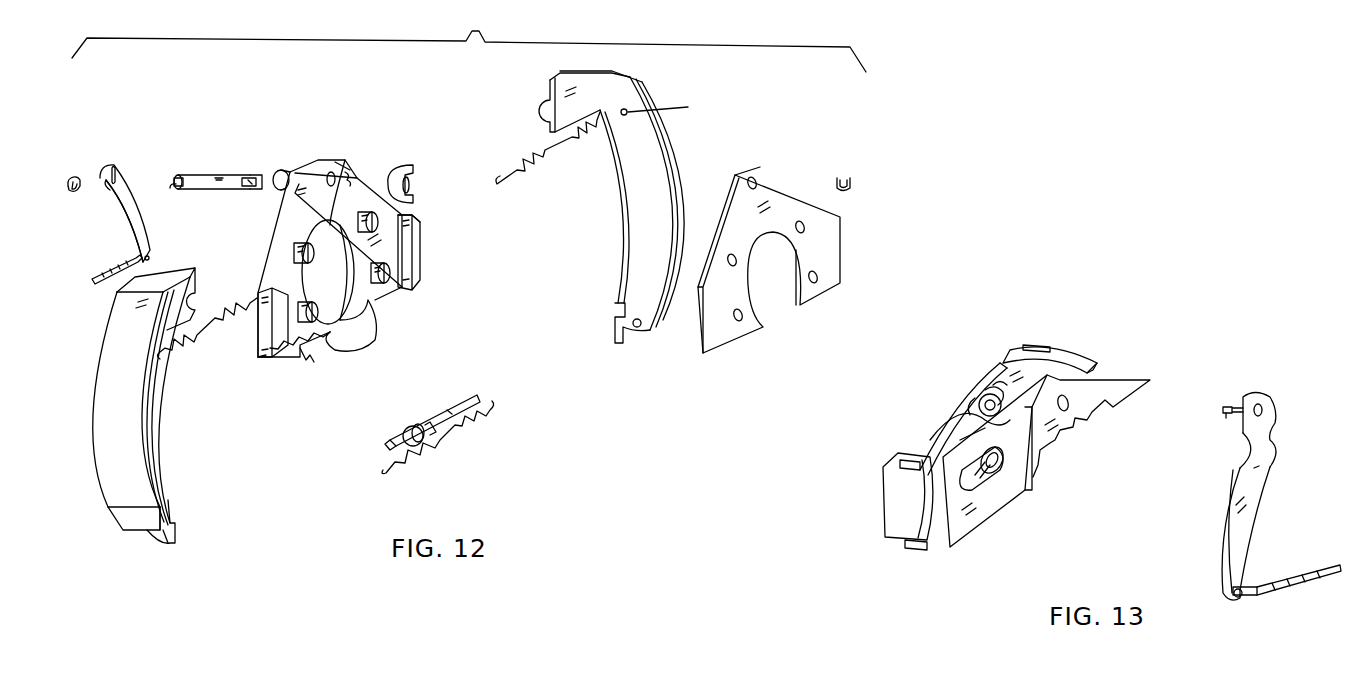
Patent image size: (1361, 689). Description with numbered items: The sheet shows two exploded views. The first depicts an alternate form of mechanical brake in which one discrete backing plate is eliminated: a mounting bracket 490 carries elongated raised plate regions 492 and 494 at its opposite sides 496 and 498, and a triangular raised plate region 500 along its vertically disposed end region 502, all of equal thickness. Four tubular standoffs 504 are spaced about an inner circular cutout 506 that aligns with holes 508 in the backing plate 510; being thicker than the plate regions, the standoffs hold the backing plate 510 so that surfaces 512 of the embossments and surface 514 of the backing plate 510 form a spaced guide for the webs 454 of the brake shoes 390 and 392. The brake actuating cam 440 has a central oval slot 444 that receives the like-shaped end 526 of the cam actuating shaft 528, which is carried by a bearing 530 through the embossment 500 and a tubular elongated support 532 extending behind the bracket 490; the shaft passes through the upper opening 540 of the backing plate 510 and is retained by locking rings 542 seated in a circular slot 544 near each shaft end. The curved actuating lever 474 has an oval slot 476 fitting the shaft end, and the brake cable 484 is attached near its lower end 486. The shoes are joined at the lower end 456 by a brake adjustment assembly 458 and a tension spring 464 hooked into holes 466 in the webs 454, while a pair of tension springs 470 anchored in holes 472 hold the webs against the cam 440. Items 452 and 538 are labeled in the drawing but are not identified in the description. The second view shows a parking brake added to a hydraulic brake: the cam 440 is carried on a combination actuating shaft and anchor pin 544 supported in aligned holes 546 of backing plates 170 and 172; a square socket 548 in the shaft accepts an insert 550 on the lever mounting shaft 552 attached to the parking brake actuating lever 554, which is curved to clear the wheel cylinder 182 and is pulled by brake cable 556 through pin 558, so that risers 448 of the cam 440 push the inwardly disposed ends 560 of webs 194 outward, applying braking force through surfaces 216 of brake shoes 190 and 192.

In FIG. 12, the brake shoe 390 is at (97, 423).
In FIG. 12, the brake shoe 392 is at (690, 140).
In FIG. 12, the brake actuating cam 440 is at (405, 168).
In FIG. 13, the brake actuating cam 440 is at (975, 399).
In FIG. 12, the oval slot 444 is at (415, 180).
In FIG. 13, the risers 448 is at (955, 424).
In FIG. 12, the shoe web 452 is at (199, 271).
In FIG. 12, the webs 454 is at (165, 455).
In FIG. 12, the lower end 456 is at (176, 546).
In FIG. 12, the brake adjustment assembly 458 is at (460, 394).
In FIG. 12, the tension spring 464 is at (442, 450).
In FIG. 12, the holes 466 is at (641, 328).
In FIG. 12, the tension springs 470 is at (197, 345).
In FIG. 12, the holes 472 is at (662, 108).
In FIG. 12, the actuating lever 474 is at (142, 214).
In FIG. 12, the oval slot 476 is at (125, 199).
In FIG. 12, the brake cable 484 is at (122, 260).
In FIG. 12, the lower end 486 is at (152, 256).
In FIG. 12, the mounting bracket 490 is at (312, 365).
In FIG. 12, the raised plate region 492 is at (262, 360).
In FIG. 12, the raised plate region 494 is at (415, 285).
In FIG. 12, the side 496 is at (259, 333).
In FIG. 12, the side 498 is at (412, 215).
In FIG. 12, the triangular-shaped embossment 500 is at (340, 163).
In FIG. 12, the vertically disposed end region 502 is at (288, 222).
In FIG. 12, the tubular standoffs 504 is at (382, 285).
In FIG. 12, the inner circular cutout 506 is at (374, 336).
In FIG. 12, the holes 508 is at (818, 272).
In FIG. 12, the backing plate 510 is at (838, 262).
In FIG. 12, the surfaces 512 is at (352, 178).
In FIG. 12, the surface 514 is at (760, 167).
In FIG. 12, the end 526 is at (248, 190).
In FIG. 12, the cam actuating shaft 528 is at (238, 162).
In FIG. 12, the bearing 530 is at (331, 172).
In FIG. 12, the tubular elongated support 532 is at (292, 170).
In FIG. 12, the groove 538 is at (172, 188).
In FIG. 12, the upper opening 540 is at (760, 169).
In FIG. 12, the locking rings 542 is at (78, 170).
In FIG. 12, the combination brake actuating shaft and anchor pin 544 is at (184, 163).
In FIG. 13, the combination brake actuating shaft and anchor pin 544 is at (988, 379).
In FIG. 13, the aligned holes 546 is at (1068, 412).
In FIG. 13, the square socket 548 is at (985, 389).
In FIG. 13, the insert 550 is at (1232, 401).
In FIG. 13, the lever mounting shaft 552 is at (1231, 416).
In FIG. 13, the parking brake actuating lever 554 is at (1270, 426).
In FIG. 13, the brake cable 556 is at (1312, 577).
In FIG. 13, the pin 558 is at (1240, 597).
In FIG. 13, the inwardly disposed ends 560 is at (965, 407).
In FIG. 13, the backing plate 170 is at (1108, 378).
In FIG. 13, the backing plate 172 is at (950, 537).
In FIG. 13, the wheel cylinder 182 is at (1000, 490).
In FIG. 13, the brake shoe 190 is at (883, 515).
In FIG. 13, the brake shoe 192 is at (1098, 338).
In FIG. 13, the webs 194 is at (1002, 360).
In FIG. 13, the surfaces 216 is at (1042, 333).